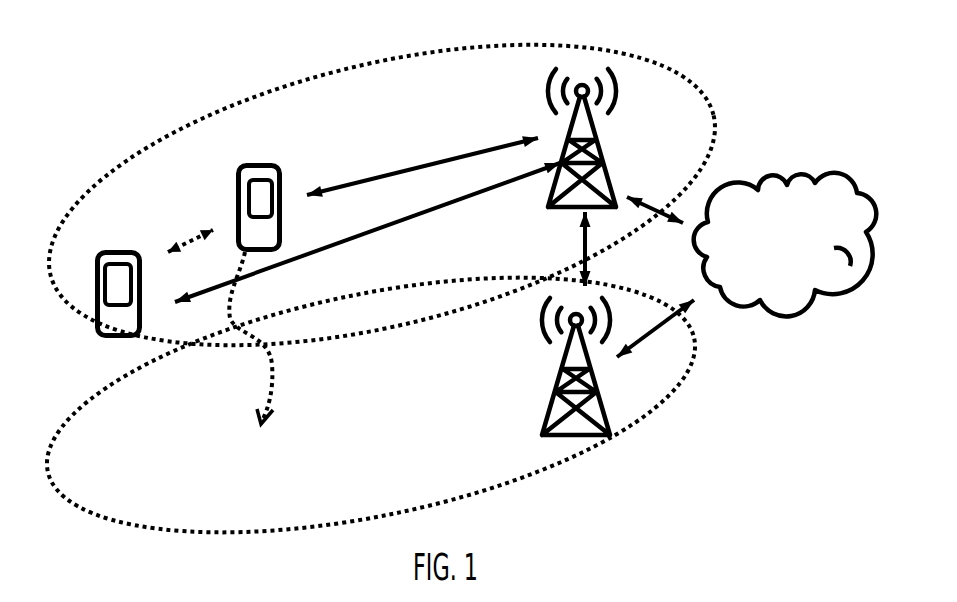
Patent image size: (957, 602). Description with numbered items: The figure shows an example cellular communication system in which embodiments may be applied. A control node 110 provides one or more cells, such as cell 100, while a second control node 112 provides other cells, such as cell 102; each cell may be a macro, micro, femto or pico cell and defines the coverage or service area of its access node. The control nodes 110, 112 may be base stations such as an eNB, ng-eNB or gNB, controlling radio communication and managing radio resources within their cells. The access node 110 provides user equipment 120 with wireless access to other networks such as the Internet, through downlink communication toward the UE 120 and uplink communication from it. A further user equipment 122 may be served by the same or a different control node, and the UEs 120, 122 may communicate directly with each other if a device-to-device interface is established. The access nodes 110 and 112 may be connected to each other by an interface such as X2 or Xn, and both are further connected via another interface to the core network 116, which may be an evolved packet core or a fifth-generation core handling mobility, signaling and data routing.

The cell 100 is at (386, 60).
The cell 102 is at (174, 82).
The control node 110 is at (600, 176).
The control node 112 is at (600, 432).
The core network 116 is at (785, 245).
The user equipment 120 is at (238, 165).
The user equipment 122 is at (98, 252).